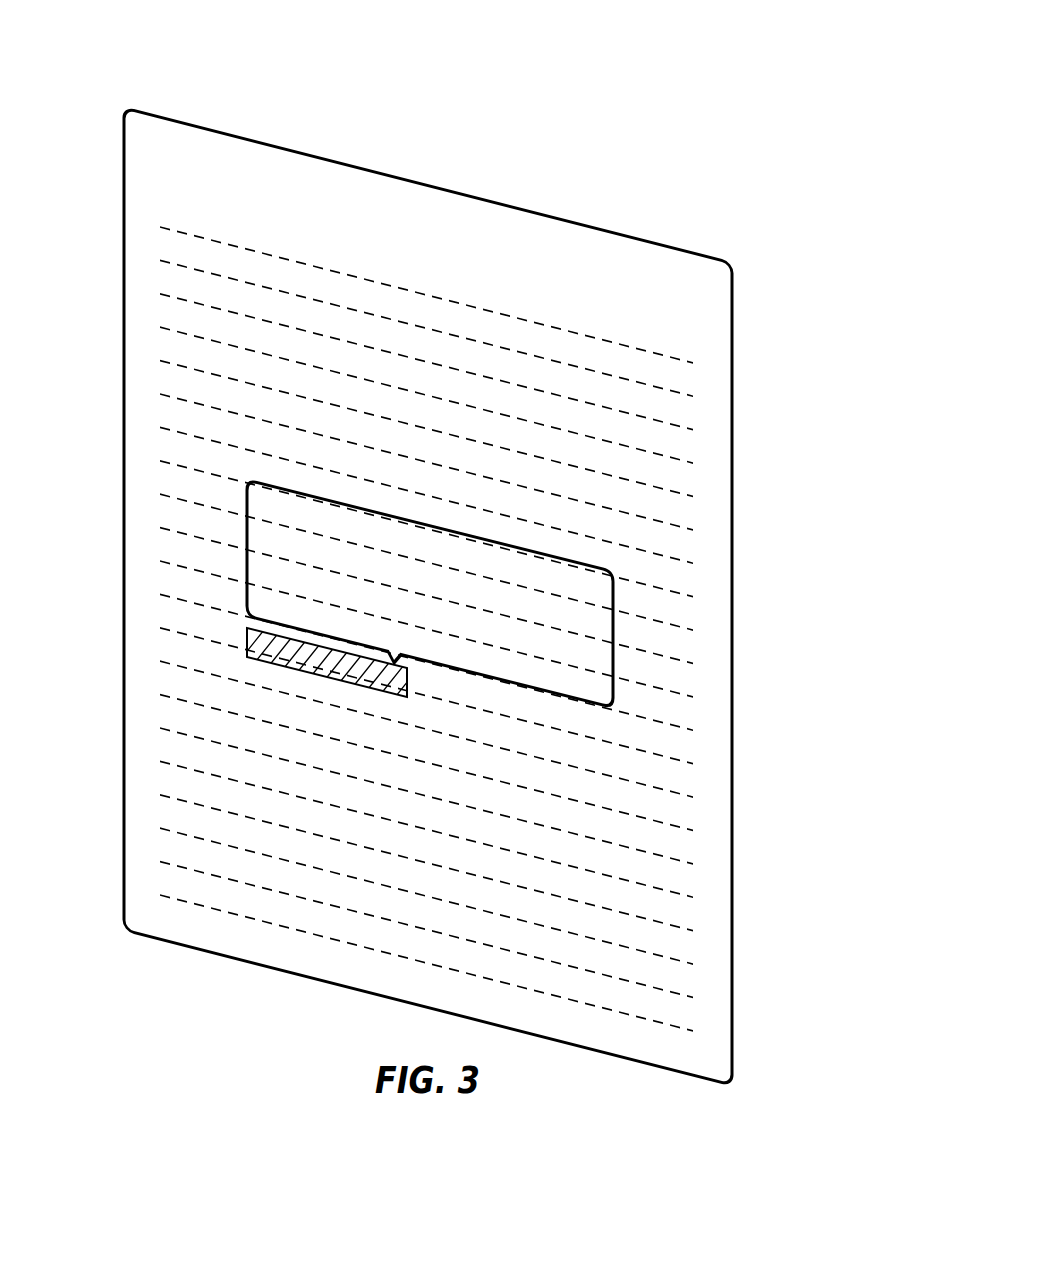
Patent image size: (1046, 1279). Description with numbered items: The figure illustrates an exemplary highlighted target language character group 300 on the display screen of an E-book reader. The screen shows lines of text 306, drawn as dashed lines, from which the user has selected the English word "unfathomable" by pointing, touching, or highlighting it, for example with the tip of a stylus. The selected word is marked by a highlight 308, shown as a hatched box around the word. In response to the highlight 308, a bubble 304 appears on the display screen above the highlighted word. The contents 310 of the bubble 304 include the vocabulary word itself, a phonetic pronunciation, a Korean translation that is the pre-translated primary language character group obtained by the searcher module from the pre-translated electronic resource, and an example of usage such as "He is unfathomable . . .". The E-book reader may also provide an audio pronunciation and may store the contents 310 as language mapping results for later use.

The highlighted target language character group 300 is at (604, 59).
The bubble 304 is at (298, 478).
The text 306 is at (176, 298).
The highlight 308 is at (316, 673).
The contents 310 is at (555, 660).